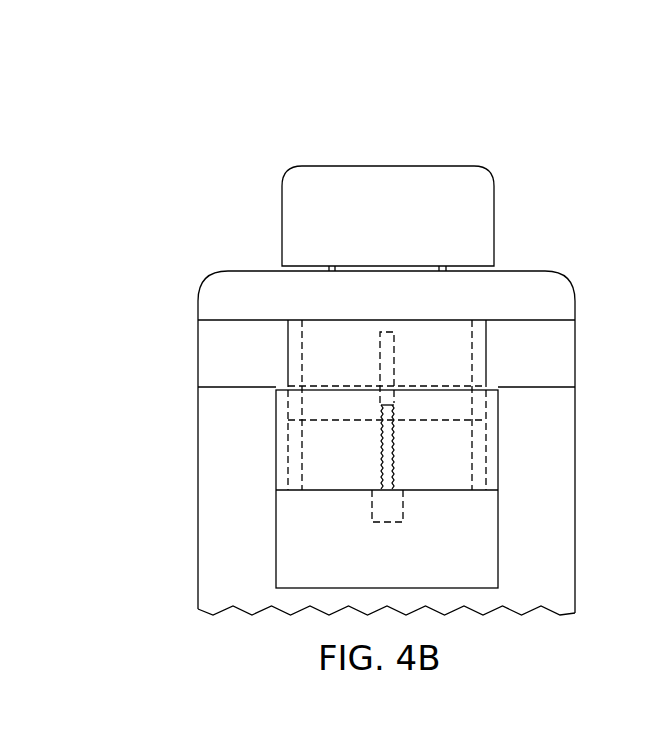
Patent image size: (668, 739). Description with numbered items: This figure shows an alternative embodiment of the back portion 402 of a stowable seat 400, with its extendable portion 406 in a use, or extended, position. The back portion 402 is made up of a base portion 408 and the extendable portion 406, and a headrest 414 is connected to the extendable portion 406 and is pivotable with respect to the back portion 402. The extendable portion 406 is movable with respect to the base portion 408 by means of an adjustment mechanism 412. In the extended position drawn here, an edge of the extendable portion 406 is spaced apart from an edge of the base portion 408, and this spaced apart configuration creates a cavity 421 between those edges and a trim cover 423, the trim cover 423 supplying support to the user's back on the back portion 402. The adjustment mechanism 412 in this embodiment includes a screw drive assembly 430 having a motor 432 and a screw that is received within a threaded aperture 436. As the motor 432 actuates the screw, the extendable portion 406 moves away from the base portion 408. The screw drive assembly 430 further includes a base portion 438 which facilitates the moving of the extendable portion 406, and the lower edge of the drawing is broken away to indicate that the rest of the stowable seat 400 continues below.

The stowable seat 400 is at (578, 140).
The back portion 402 is at (183, 483).
The extendable portion 406 is at (567, 302).
The base portion 408 is at (567, 490).
The adjustment mechanism 412 is at (230, 252).
The headrest 414 is at (493, 203).
The cavity 421 is at (222, 337).
The trim cover 423 is at (567, 365).
The screw drive assembly 430 is at (223, 573).
The motor 432 is at (372, 512).
The threaded aperture 436 is at (396, 368).
The base portion 438 is at (478, 368).